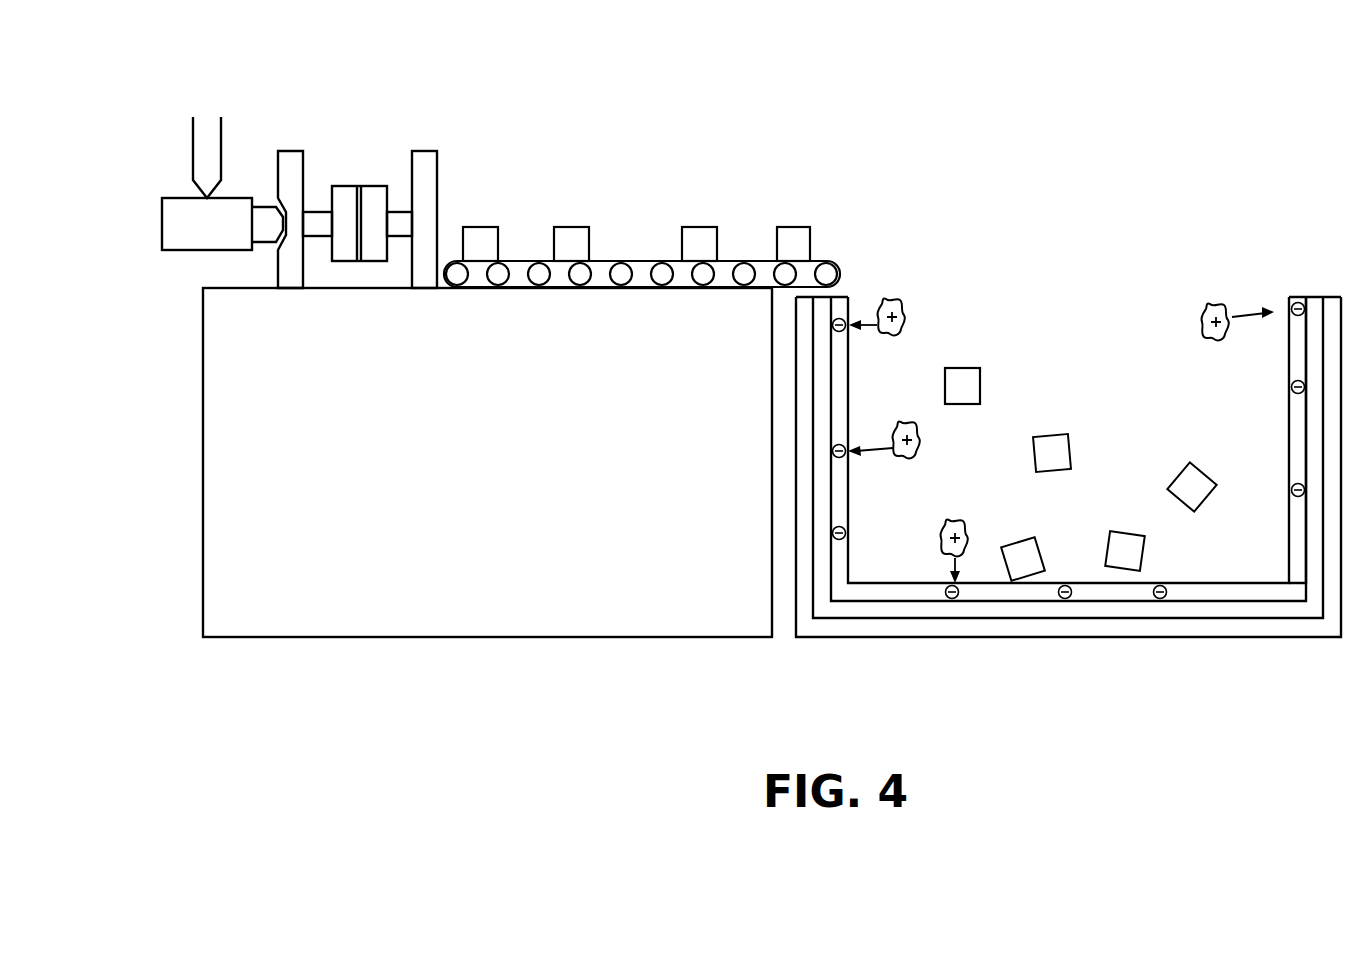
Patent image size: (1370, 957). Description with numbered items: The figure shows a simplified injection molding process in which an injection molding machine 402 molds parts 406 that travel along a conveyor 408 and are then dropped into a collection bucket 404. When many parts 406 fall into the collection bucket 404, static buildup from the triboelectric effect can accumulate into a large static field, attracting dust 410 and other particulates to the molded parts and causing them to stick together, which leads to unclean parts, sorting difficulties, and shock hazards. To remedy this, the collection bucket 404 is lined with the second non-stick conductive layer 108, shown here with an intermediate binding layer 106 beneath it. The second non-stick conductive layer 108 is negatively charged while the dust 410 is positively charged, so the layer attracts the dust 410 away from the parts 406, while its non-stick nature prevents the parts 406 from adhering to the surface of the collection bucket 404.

The injection molding machine 402 is at (383, 668).
The collection bucket 404 is at (1027, 661).
The parts 406 is at (498, 237).
The conveyor 408 is at (843, 272).
The dust 410 is at (906, 310).
The intermediate binding layer 106 is at (1315, 297).
The second non-stick conductive layer 108 is at (1290, 300).